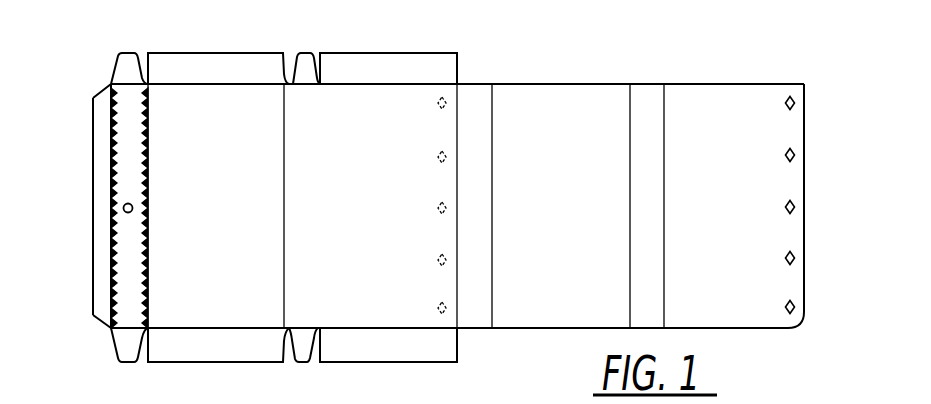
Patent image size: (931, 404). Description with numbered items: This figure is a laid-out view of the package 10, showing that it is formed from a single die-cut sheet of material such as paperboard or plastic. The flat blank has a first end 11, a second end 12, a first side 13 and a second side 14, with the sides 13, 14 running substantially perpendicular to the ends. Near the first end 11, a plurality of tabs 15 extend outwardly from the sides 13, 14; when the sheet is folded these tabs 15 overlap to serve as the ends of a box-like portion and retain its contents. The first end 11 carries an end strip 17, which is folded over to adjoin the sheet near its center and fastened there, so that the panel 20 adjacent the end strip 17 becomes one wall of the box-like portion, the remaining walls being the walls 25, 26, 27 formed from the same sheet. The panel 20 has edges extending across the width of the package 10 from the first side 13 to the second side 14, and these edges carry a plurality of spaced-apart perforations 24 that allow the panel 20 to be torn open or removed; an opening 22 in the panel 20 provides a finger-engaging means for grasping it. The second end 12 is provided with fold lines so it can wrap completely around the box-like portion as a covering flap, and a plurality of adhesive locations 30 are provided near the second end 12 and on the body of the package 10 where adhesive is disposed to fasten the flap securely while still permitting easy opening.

The package 10 is at (579, 46).
The first end 11 is at (95, 168).
The second end 12 is at (807, 193).
The first side 13 is at (542, 83).
The second side 14 is at (548, 332).
The tabs 15 is at (177, 30).
The end strip 17 is at (100, 303).
The panel 20 is at (128, 310).
The opening 22 is at (134, 208).
The perforations 24 is at (113, 107).
The wall 25 is at (230, 318).
The wall 26 is at (313, 241).
The wall 27 is at (422, 318).
The adhesive locations 30 is at (440, 202).